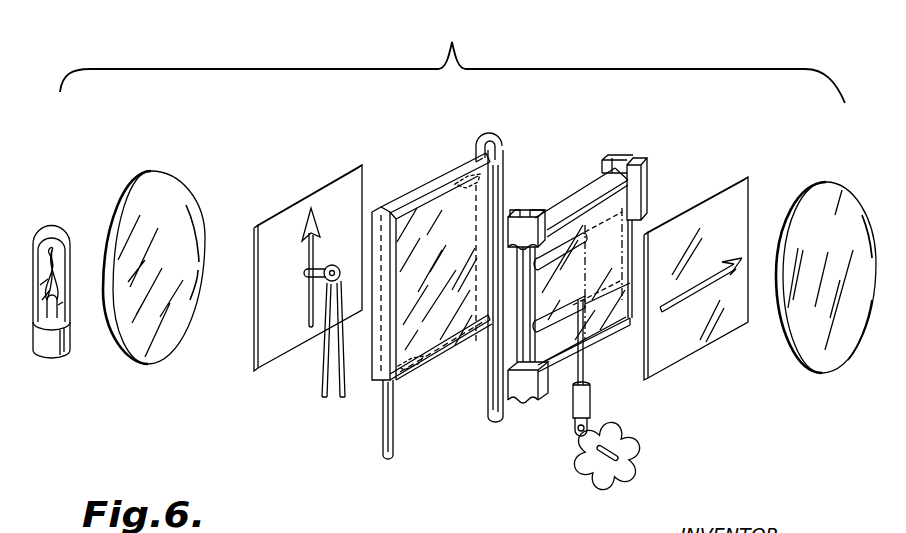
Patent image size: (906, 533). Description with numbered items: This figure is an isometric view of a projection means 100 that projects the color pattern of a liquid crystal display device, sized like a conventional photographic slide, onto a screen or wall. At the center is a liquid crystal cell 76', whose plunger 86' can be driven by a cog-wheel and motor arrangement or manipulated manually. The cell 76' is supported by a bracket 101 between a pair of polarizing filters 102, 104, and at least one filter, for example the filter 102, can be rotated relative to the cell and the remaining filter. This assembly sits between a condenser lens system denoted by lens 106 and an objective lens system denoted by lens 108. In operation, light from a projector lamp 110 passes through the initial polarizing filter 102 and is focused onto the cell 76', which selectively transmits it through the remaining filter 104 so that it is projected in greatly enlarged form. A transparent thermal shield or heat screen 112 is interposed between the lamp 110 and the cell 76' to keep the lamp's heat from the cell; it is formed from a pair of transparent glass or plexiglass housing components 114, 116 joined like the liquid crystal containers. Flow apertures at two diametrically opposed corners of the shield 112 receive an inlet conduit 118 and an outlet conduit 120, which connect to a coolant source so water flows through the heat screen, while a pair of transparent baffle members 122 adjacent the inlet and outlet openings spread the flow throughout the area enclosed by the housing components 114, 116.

The projection means 100 is at (452, 58).
The projector lamp 110 is at (45, 226).
The condenser lens 106 is at (142, 188).
The polarizing filter 102 is at (305, 196).
The thermal shield 112 is at (445, 170).
The housing component 114 is at (425, 185).
The outlet conduit 120 is at (492, 137).
The baffle members 122 is at (484, 177).
The housing component 116 is at (438, 358).
The inlet conduit 118 is at (383, 438).
The liquid crystal cell 76' is at (606, 258).
The bracket 101 is at (636, 158).
The plunger 86' is at (606, 395).
The polarizing filter 104 is at (733, 176).
The objective lens 108 is at (823, 190).